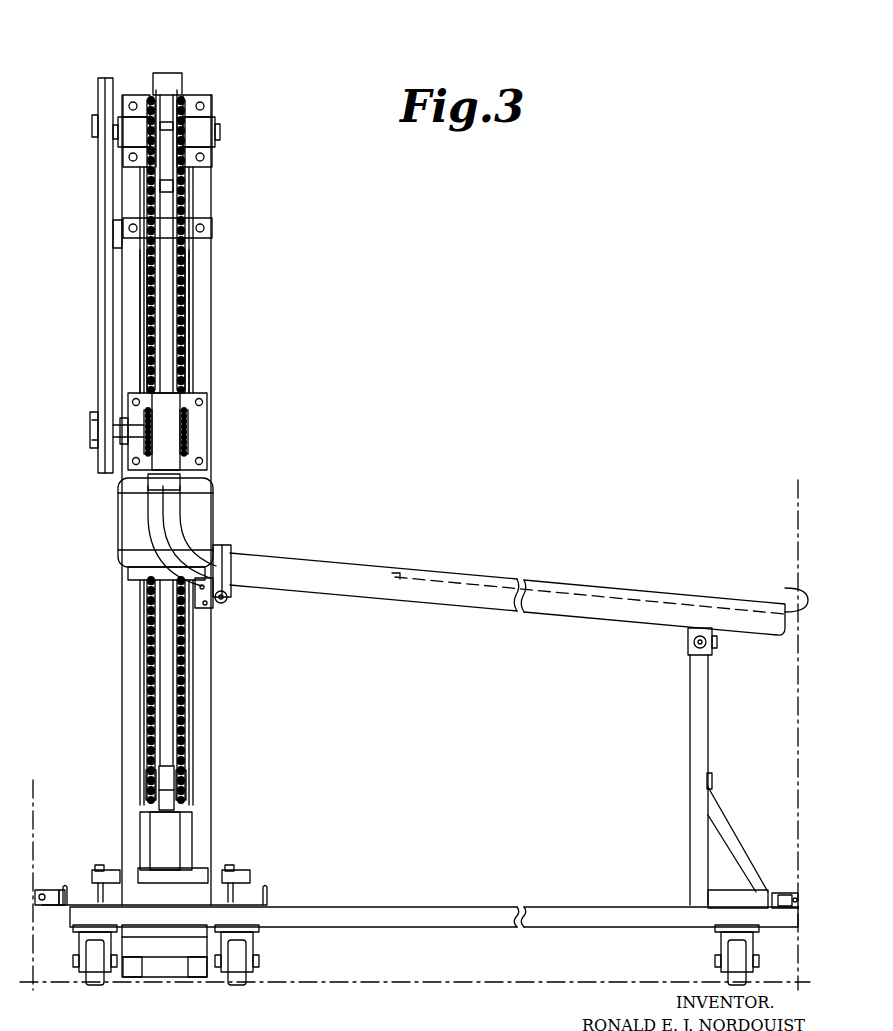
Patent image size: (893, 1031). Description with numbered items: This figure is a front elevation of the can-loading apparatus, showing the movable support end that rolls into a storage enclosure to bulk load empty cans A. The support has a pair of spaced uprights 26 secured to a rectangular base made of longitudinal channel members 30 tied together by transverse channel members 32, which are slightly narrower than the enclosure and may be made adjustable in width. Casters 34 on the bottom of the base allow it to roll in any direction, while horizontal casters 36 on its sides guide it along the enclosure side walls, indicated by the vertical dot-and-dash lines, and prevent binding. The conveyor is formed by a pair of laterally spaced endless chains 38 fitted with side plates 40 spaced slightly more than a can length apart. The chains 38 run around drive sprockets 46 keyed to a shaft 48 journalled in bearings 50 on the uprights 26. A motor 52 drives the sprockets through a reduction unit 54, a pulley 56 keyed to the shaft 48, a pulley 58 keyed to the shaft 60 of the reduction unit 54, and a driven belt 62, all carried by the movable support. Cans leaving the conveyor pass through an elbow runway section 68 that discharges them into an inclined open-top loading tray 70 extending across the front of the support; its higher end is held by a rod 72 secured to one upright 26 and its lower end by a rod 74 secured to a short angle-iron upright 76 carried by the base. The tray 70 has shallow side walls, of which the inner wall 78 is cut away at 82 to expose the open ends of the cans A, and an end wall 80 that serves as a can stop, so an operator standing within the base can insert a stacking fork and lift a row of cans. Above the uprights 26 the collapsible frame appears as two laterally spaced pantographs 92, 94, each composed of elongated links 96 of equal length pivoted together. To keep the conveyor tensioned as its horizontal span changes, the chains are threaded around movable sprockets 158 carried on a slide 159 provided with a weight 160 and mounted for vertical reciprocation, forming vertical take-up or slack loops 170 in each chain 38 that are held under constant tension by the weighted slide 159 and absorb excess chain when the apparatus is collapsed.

The empty cans A is at (166, 79).
The uprights 26 is at (125, 660).
The longitudinal channel members 30 is at (78, 887).
The transverse channel members 32 is at (417, 907).
The casters 34 is at (92, 963).
The horizontal casters 36 is at (43, 888).
The endless chains 38 is at (150, 253).
The side plates 40 is at (158, 92).
The drive sprockets 46 is at (150, 112).
The shaft 48 is at (220, 132).
The bearings 50 is at (197, 127).
The motor 52 is at (198, 507).
The reduction unit 54 is at (165, 432).
The pulley 56 is at (98, 96).
The pulley 58 is at (92, 455).
The shaft 60 is at (135, 433).
The driven belt 62 is at (108, 234).
The elbow runway section 68 is at (155, 515).
The loading tray 70 is at (407, 602).
The rod 72 is at (227, 596).
The rod 74 is at (694, 643).
The angle-iron upright 76 is at (298, 570).
The inner side wall 78 is at (400, 572).
The end wall 80 is at (787, 593).
The cut-away 82 is at (542, 593).
The pantograph 92 is at (190, 317).
The pantograph 94 is at (142, 319).
The links 96 is at (147, 285).
The movable sprockets 158 is at (157, 782).
The slide 159 is at (160, 788).
The weight 160 is at (167, 845).
The slack loops 170 is at (147, 719).